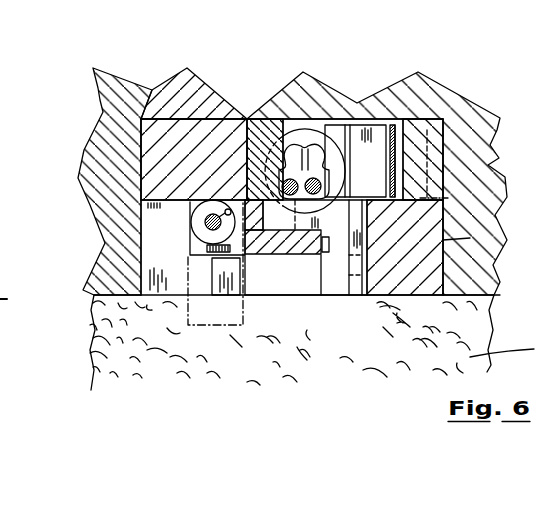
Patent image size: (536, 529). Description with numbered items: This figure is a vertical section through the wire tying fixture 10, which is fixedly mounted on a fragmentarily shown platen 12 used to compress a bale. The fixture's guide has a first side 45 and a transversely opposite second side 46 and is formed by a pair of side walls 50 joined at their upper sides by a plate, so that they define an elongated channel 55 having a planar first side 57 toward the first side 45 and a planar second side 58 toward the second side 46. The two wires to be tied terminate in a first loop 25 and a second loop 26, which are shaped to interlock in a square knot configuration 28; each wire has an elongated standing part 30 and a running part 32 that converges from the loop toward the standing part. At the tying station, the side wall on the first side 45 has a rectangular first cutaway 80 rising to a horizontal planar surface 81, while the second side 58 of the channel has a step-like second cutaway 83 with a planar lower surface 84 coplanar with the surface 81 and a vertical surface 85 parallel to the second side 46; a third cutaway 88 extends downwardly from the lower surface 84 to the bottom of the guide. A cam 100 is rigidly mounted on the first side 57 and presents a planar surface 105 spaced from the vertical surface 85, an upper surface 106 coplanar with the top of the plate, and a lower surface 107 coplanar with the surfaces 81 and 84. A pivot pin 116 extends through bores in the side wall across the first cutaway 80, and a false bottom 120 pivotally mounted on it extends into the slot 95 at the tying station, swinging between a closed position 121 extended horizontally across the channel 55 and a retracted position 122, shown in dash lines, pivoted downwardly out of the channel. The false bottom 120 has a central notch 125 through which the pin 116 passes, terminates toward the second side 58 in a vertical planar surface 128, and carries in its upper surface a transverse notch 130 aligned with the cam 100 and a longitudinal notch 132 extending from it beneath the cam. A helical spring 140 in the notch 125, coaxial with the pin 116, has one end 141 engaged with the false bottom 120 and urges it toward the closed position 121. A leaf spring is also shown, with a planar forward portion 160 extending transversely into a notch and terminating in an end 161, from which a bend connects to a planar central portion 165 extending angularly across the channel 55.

The wire tying fixture 10 is at (118, 152).
The platen 12 is at (460, 103).
The first side of guide 45 is at (140, 185).
The side walls 50 is at (183, 150).
The upper surface of cam 106 is at (247, 118).
The cam 100 is at (258, 108).
The planar surface of cam 105 is at (290, 130).
The second loop 26 is at (300, 129).
The square knot configuration 28 is at (323, 113).
The standing part 30 is at (345, 155).
The running part 32 is at (288, 173).
The second cutaway 83 is at (366, 118).
The vertical surface of second cutaway 85 is at (400, 137).
The central portion of leaf spring 165 is at (393, 191).
The end of leaf spring forward portion 161 is at (437, 198).
The forward portion of leaf spring 160 is at (443, 216).
The lower surface of second cutaway 84 is at (396, 206).
The first loop 25 is at (349, 212).
The vertical planar surface of false bottom 128 is at (323, 253).
The closed position 121 is at (330, 252).
The second side of guide 46 is at (452, 241).
The lower surface of cam 107 is at (256, 203).
The helical spring 140 is at (214, 203).
The pivot pin 116 is at (205, 225).
The central notch of false bottom 125 is at (222, 244).
The horizontal planar surface of side wall 81 is at (173, 218).
The first cutaway 80 is at (163, 296).
The false bottom 120 is at (202, 266).
The retracted position 122 is at (223, 327).
The first side of channel 57 is at (248, 290).
The one end of helical spring 141 is at (249, 284).
The longitudinal notch 132 is at (278, 224).
The transverse notch 130 is at (305, 226).
The channel 55 is at (297, 305).
The slot 95 is at (325, 306).
The third cutaway 88 is at (367, 296).
The second side of channel 58 is at (343, 296).